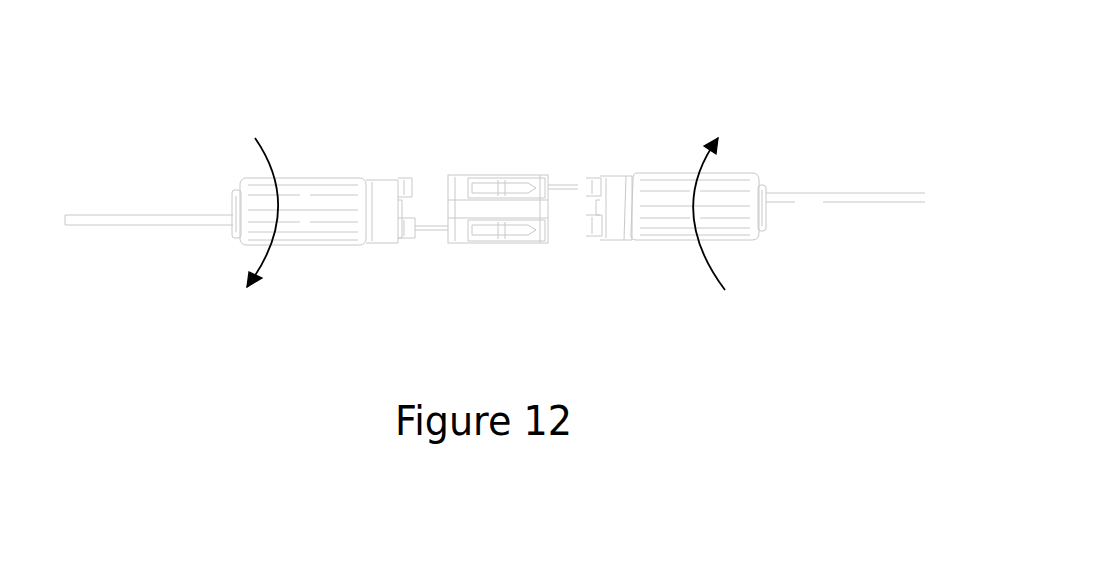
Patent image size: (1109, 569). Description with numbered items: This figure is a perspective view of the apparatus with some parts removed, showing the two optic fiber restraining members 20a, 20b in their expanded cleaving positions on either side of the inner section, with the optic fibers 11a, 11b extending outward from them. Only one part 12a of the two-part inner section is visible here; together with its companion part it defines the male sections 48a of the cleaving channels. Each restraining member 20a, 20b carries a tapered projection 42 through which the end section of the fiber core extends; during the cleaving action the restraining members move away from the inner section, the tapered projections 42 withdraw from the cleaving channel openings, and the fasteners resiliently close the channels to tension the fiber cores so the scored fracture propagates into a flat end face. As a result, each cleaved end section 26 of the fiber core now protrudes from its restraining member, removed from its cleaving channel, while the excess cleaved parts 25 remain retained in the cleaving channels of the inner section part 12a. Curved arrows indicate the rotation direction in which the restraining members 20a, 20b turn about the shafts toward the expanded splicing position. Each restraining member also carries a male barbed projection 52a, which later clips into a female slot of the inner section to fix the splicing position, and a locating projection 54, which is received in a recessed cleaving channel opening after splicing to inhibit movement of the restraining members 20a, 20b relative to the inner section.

The optic fiber 11a is at (160, 215).
The optic fiber 11b is at (800, 193).
The optic fiber restraining member 20a is at (303, 177).
The optic fiber restraining member 20b is at (672, 175).
The locating projection 54 is at (405, 207).
The male barbed projection 52a is at (409, 180).
The projection 42 is at (404, 239).
The cleaved end section 26 is at (429, 233).
The part of inner section 12a is at (467, 238).
The excess cleaved part 25 is at (481, 187).
The male section of cleaving channel 48a is at (516, 181).